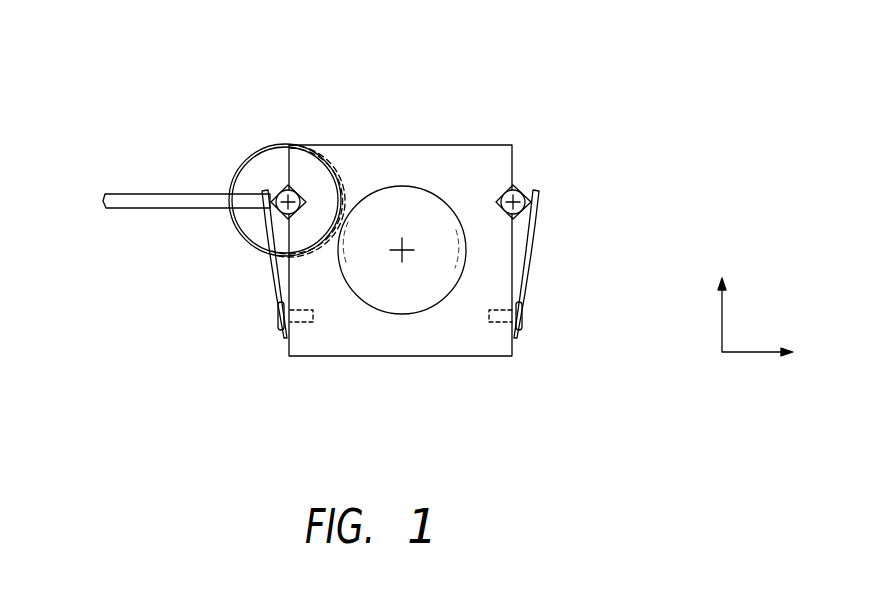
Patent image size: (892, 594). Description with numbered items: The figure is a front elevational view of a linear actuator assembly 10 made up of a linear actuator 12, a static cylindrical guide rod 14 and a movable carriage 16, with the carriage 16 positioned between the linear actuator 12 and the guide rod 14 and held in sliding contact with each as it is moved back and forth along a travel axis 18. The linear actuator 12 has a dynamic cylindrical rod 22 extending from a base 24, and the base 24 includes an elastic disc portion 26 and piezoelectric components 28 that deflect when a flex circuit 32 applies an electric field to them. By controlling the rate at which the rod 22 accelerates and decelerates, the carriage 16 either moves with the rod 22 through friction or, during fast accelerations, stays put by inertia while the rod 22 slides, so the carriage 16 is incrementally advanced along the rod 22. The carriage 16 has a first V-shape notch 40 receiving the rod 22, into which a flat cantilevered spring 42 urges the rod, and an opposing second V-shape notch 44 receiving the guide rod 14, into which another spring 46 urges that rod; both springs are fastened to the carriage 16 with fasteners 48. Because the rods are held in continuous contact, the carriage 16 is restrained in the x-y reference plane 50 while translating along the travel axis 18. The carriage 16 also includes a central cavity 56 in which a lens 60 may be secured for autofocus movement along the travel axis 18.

The linear actuator assembly 10 is at (622, 40).
The linear actuator 12 is at (196, 220).
The static cylindrical guide rod 14 is at (521, 188).
The movable carriage 16 is at (390, 165).
The travel axis 18 is at (405, 263).
The dynamic cylindrical rod 22 is at (284, 188).
The base 24 is at (400, 201).
The elastic disc portion 26 is at (250, 152).
The piezoelectric components 28 is at (248, 225).
The flex circuit 32 is at (168, 193).
The first V-shape notch 40 is at (306, 200).
The spring 42 is at (264, 243).
The second V-shape notch 44 is at (497, 199).
The spring 46 is at (531, 214).
The fasteners 48 is at (279, 318).
The x-y reference plane 50 is at (748, 352).
The central cavity 56 is at (446, 314).
The lens 60 is at (360, 293).